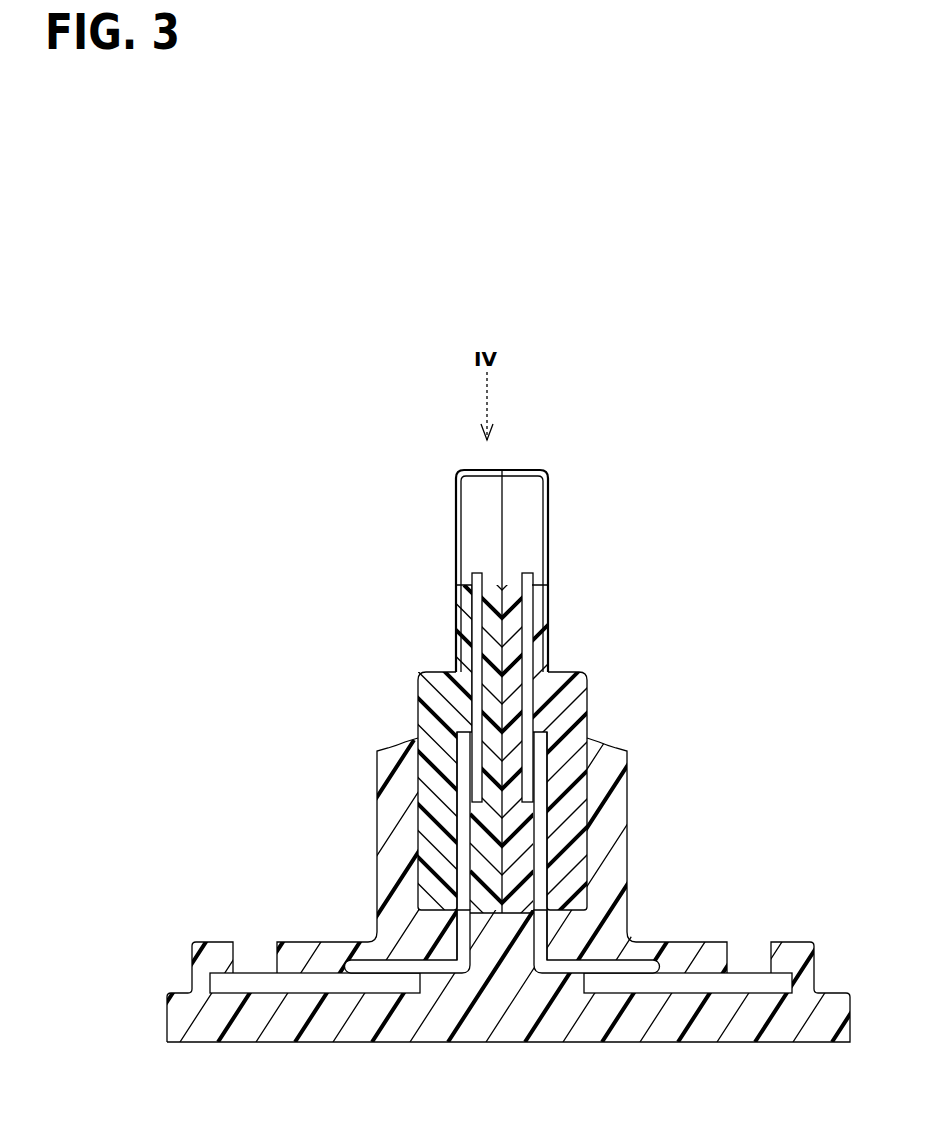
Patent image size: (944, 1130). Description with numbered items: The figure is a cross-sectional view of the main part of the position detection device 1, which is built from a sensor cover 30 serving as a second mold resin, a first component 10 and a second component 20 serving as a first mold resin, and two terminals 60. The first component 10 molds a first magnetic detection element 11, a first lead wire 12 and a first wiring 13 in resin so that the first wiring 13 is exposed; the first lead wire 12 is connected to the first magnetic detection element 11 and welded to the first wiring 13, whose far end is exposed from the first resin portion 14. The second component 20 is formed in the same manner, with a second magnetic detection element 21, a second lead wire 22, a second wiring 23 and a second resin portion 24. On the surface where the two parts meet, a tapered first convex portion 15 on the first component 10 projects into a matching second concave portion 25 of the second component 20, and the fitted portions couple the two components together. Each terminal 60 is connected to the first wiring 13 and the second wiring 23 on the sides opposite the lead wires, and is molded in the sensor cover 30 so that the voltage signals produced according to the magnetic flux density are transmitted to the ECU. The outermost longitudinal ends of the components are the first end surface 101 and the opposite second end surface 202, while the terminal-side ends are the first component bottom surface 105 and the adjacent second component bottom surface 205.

The position detection device 1 is at (680, 482).
The first component 10 is at (443, 715).
The first magnetic detection element 11 is at (482, 520).
The first lead wire 12 is at (465, 637).
The first wiring 13 is at (423, 756).
The first resin portion 14 is at (447, 818).
The first convex portion 15 is at (505, 868).
The first end surface 101 is at (418, 690).
The first component bottom surface 105 is at (480, 938).
The second component 20 is at (585, 715).
The second magnetic detection element 21 is at (520, 520).
The second lead wire 22 is at (540, 640).
The second wiring 23 is at (598, 752).
The second resin portion 24 is at (568, 825).
The second concave portion 25 is at (525, 868).
The second end surface 202 is at (587, 690).
The second component bottom surface 205 is at (516, 940).
The sensor cover 30 is at (512, 1010).
The terminal 60 is at (318, 987).